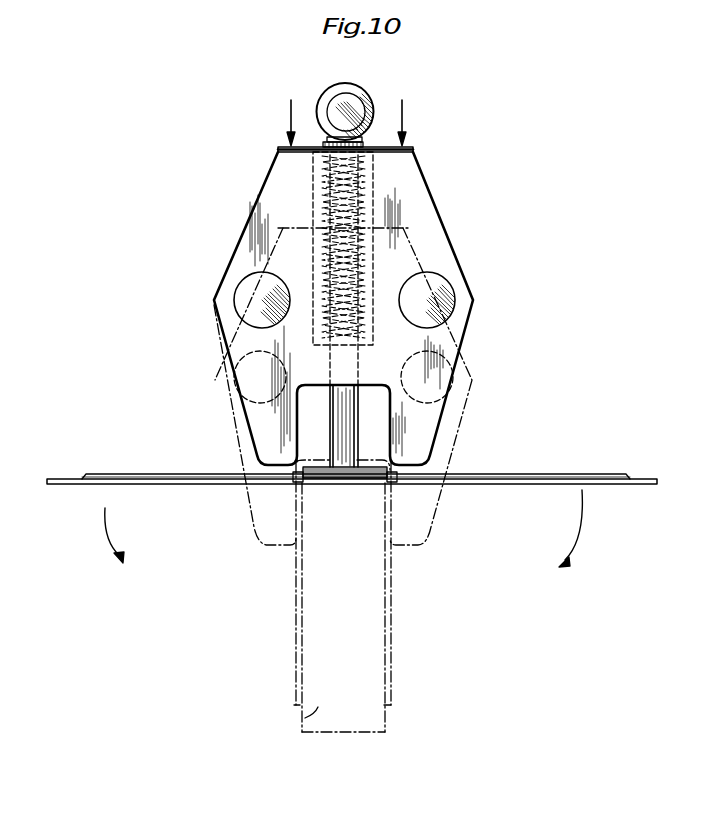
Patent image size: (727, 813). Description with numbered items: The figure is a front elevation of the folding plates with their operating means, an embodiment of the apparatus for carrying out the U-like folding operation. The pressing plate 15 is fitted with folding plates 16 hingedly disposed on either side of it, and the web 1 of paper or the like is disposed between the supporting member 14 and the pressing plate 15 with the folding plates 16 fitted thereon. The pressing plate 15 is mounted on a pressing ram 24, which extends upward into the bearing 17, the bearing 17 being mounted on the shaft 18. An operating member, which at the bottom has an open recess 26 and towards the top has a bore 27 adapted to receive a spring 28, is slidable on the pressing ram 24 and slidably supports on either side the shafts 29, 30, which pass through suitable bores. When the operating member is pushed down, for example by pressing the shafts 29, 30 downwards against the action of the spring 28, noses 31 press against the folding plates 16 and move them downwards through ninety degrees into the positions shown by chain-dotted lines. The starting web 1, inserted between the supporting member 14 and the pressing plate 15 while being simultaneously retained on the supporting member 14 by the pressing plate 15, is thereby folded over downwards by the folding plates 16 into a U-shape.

The web 1 is at (63, 486).
The supporting member 14 is at (302, 723).
The pressing plate 15 is at (343, 486).
The folding plates 16 is at (141, 474).
The bearing 17 is at (328, 97).
The shaft 18 is at (352, 110).
The pressing ram 24 is at (343, 410).
The open recess 26 is at (380, 383).
The bore 27 is at (315, 197).
The spring 28 is at (373, 200).
The shaft 29 is at (440, 292).
The shaft 30 is at (245, 288).
The noses 31 is at (265, 440).